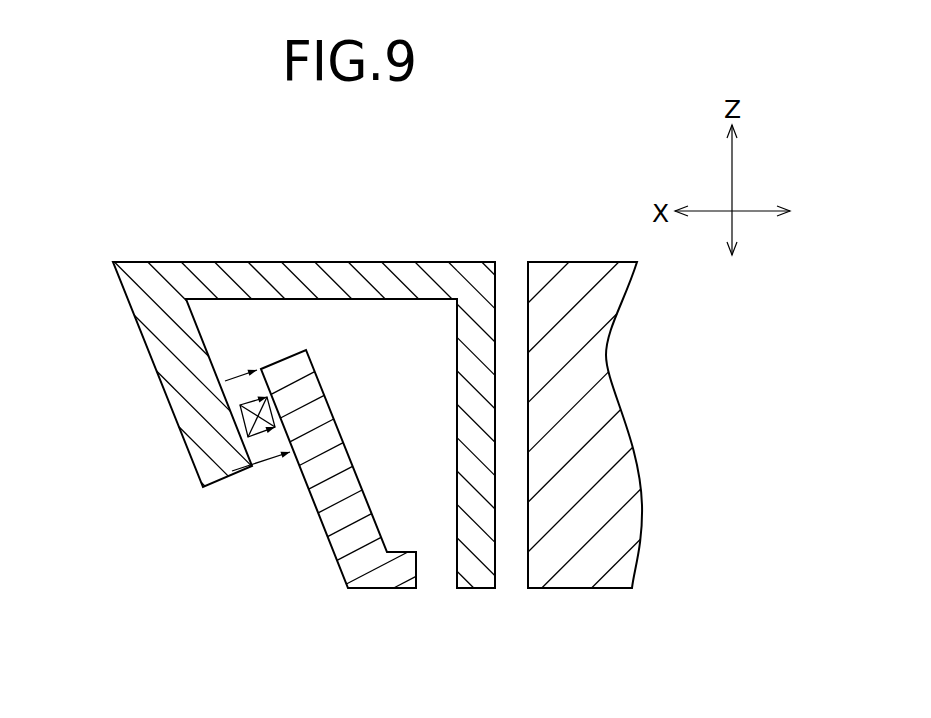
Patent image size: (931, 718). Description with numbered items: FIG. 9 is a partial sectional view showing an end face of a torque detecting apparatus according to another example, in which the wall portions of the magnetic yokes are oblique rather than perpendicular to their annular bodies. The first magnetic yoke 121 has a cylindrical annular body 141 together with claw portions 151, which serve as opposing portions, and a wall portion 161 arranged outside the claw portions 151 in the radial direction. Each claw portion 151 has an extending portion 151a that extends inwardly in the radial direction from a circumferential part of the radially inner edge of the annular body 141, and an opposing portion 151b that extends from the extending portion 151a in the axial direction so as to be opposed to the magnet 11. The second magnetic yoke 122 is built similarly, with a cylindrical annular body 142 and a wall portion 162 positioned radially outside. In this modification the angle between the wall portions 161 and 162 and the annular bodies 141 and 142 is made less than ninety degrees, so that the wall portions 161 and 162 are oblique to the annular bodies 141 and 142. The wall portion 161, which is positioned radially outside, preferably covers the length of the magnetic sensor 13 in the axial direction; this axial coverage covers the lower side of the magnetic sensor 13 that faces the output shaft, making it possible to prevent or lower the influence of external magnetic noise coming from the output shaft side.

The magnet 11 is at (588, 268).
The magnetic sensor 13 is at (264, 440).
The first magnetic yoke 121 is at (172, 266).
The second magnetic yoke 122 is at (363, 582).
The annular body 141 is at (272, 270).
The annular body 142 is at (402, 580).
The claw portions 151 is at (533, 202).
The extending portion 151a is at (404, 268).
The opposing portion 151b is at (487, 322).
The wall portion 161 is at (162, 357).
The wall portion 162 is at (337, 543).